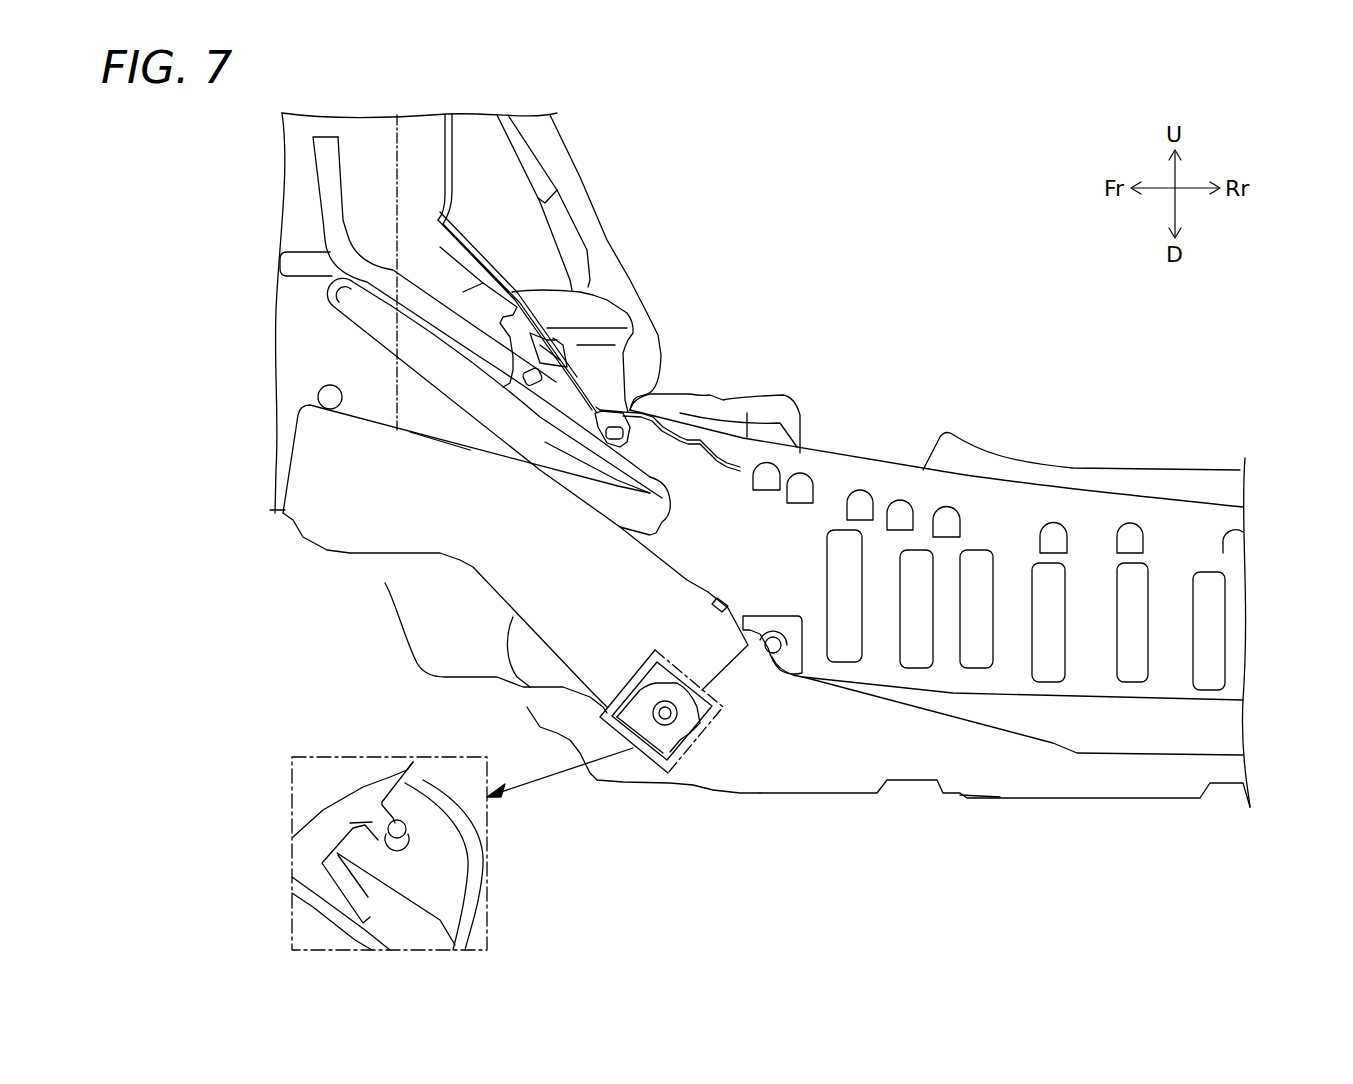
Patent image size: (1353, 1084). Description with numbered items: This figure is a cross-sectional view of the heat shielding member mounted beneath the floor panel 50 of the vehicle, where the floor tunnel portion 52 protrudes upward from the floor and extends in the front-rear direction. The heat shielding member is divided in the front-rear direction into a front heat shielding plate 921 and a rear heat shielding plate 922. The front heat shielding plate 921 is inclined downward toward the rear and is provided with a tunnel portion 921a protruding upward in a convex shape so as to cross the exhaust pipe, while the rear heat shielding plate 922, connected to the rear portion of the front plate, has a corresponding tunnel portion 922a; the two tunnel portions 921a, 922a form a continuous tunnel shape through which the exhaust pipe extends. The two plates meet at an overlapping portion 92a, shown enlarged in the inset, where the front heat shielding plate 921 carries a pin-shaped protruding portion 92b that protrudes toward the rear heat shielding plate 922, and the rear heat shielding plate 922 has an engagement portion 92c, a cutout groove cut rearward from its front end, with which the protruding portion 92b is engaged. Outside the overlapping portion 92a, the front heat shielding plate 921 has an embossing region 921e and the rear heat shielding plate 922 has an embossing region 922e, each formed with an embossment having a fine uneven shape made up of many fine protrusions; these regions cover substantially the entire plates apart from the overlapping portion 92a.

The floor panel 50 is at (443, 645).
The floor tunnel portion 52 is at (1010, 557).
The front heat shielding plate 921 is at (293, 450).
The tunnel portion 921a is at (597, 553).
The embossing region 921e is at (477, 548).
The rear heat shielding plate 922 is at (1103, 790).
The tunnel portion 922a is at (1177, 723).
The embossing region 922e is at (968, 743).
The overlapping portion 92a is at (700, 653).
The protruding portion 92b is at (403, 825).
The engagement portion 92c is at (387, 828).